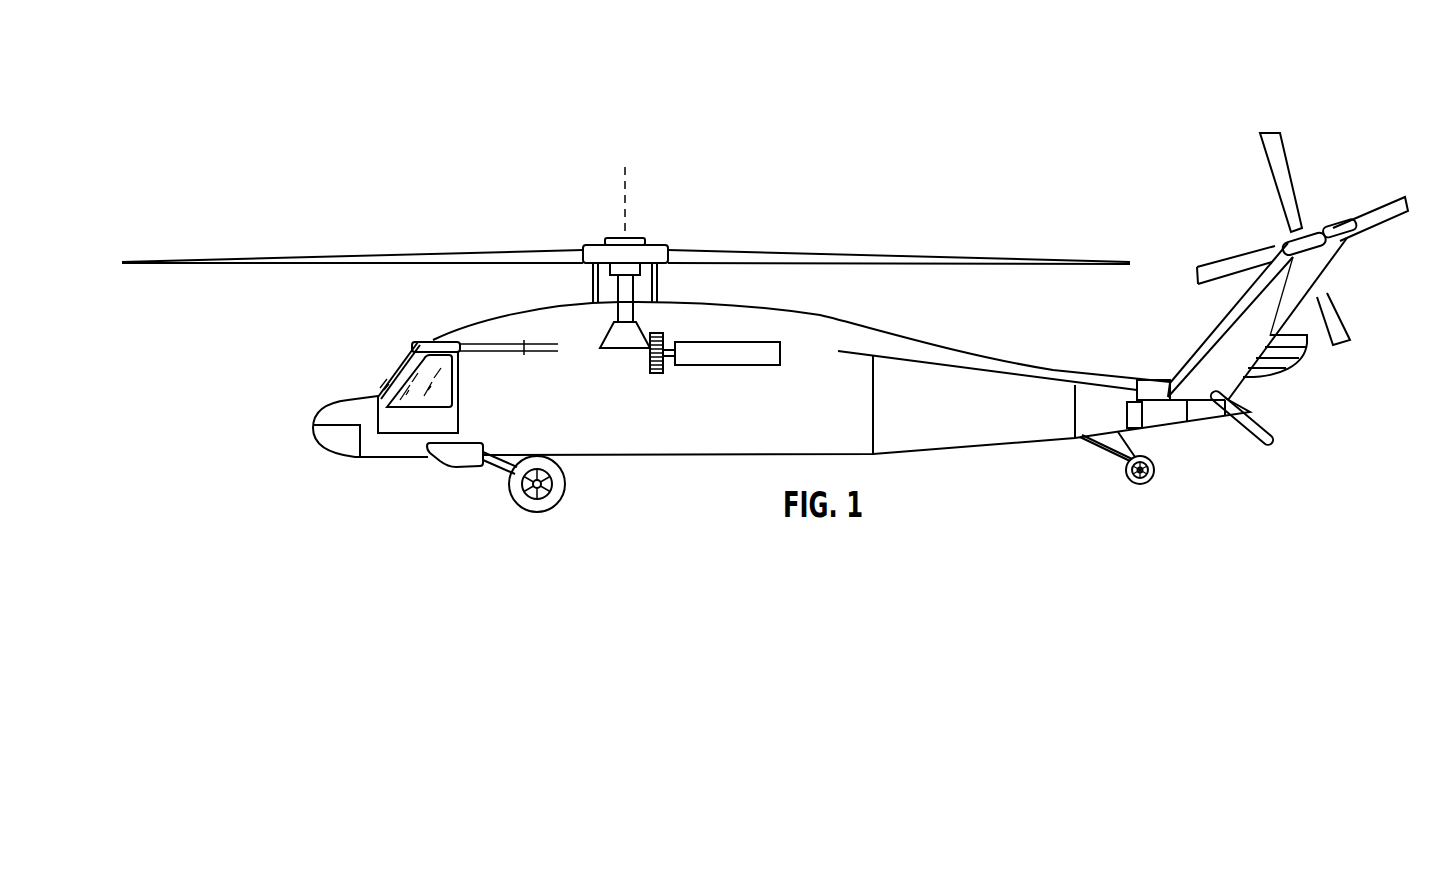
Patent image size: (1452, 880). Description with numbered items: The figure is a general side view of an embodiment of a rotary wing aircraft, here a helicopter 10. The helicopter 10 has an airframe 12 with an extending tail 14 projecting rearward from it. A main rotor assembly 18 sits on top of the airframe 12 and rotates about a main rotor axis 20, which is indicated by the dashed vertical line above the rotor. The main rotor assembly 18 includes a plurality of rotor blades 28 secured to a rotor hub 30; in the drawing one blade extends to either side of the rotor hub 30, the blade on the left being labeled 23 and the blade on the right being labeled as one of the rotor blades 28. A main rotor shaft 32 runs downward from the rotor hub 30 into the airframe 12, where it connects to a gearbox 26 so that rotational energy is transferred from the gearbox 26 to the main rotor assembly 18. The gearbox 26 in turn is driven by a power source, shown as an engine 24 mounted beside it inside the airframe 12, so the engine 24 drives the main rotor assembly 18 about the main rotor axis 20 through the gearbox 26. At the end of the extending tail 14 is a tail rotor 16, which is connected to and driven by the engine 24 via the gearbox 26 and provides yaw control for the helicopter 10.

The helicopter 10 is at (377, 108).
The airframe 12 is at (657, 488).
The extending tail 14 is at (963, 451).
The tail rotor 16 is at (1390, 217).
The main rotor assembly 18 is at (598, 244).
The main rotor axis 20 is at (628, 187).
The rotor blade 23 is at (352, 258).
The engine 24 is at (727, 366).
The gearbox 26 is at (618, 349).
The rotor blades 28 is at (957, 258).
The rotor hub 30 is at (657, 245).
The main rotor shaft 32 is at (598, 312).